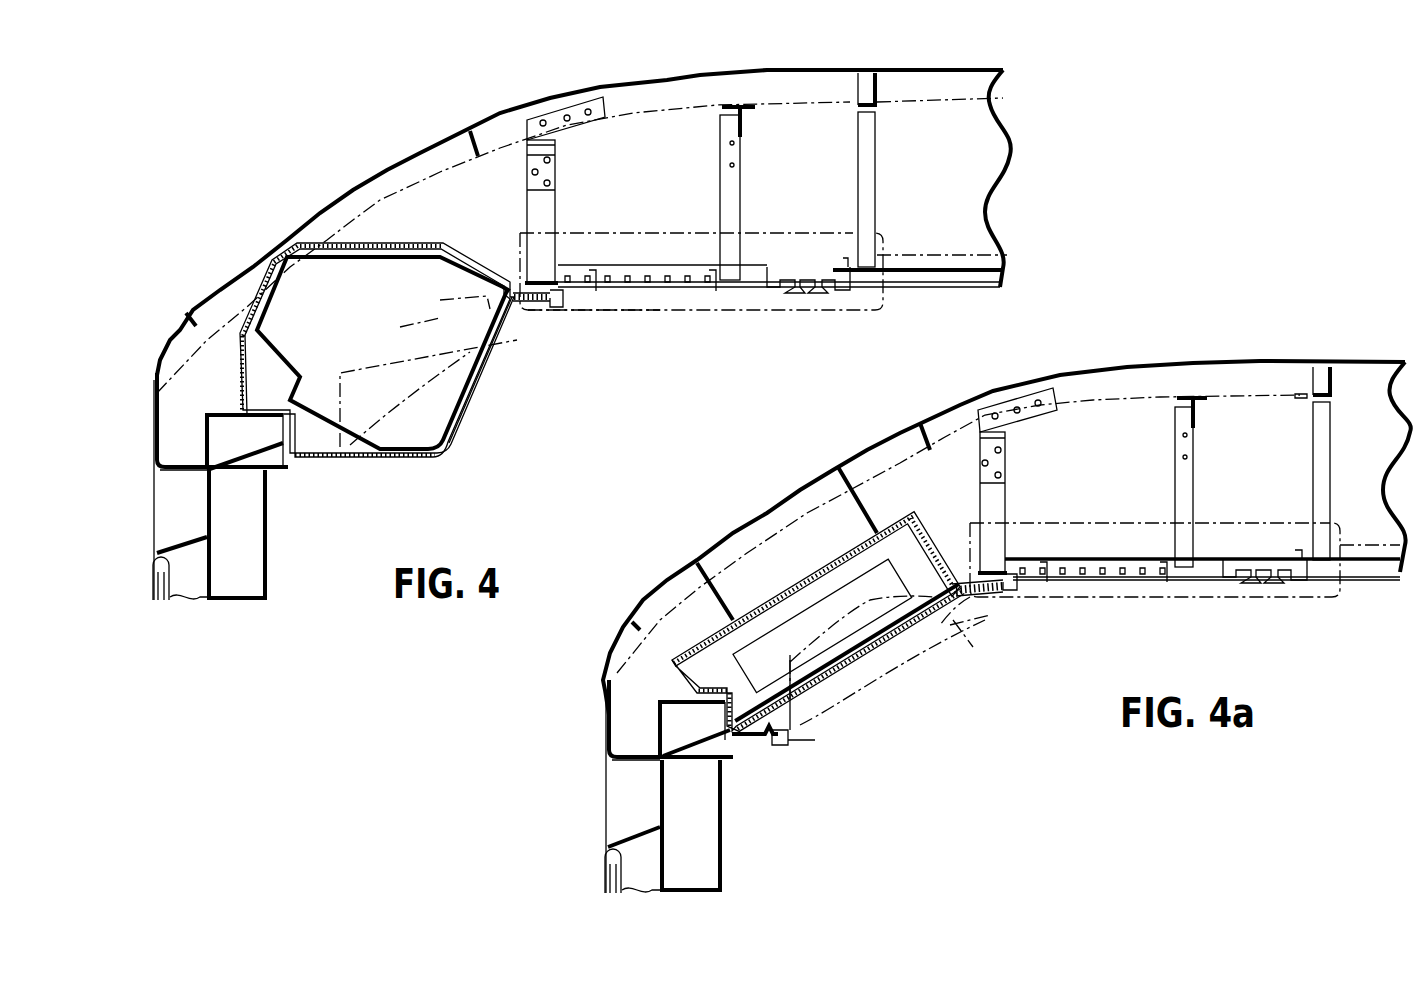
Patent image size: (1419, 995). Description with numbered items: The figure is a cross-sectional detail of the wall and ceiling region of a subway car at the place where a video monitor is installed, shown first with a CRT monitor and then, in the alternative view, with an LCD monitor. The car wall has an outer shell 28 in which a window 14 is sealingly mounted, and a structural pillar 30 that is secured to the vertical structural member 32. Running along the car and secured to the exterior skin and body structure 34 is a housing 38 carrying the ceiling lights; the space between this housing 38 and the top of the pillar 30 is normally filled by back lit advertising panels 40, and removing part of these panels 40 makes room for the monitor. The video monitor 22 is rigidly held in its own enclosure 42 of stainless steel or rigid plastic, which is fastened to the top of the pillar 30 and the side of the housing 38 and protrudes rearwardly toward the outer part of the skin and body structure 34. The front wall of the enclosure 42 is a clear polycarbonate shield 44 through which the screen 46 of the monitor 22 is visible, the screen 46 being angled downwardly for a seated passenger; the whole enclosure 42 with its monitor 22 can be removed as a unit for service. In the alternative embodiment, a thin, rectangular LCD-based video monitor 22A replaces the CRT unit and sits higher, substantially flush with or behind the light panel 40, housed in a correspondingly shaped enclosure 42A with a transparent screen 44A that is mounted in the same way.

In FIG. 4, the window 14 is at (150, 573).
In FIG. 4A, the window 14 is at (603, 867).
In FIG. 4, the video monitor 22 is at (468, 405).
In FIG. 4A, the LCD-based video monitor 22A is at (860, 627).
In FIG. 4, the outer shell 28 is at (157, 517).
In FIG. 4A, the outer shell 28 is at (615, 810).
In FIG. 4, the structural pillar 30 is at (240, 437).
In FIG. 4A, the structural pillar 30 is at (692, 725).
In FIG. 4, the vertical structural member 32 is at (267, 533).
In FIG. 4A, the vertical structural member 32 is at (720, 827).
In FIG. 4, the exterior skin and body structure 34 is at (636, 83).
In FIG. 4A, the exterior skin and body structure 34 is at (1140, 365).
In FIG. 4, the housing 38 is at (532, 170).
In FIG. 4A, the housing 38 is at (983, 462).
In FIG. 4, the back lit advertising panel 40 is at (522, 320).
In FIG. 4A, the back lit advertising panel 40 is at (980, 647).
In FIG. 4, the enclosure 42 is at (373, 241).
In FIG. 4A, the enclosure for the LCD-based monitor 42A is at (810, 577).
In FIG. 4, the transparent polycarbonate shield 44 is at (468, 407).
In FIG. 4A, the transparent screen 44A is at (830, 675).
In FIG. 4, the screen 46 is at (437, 352).